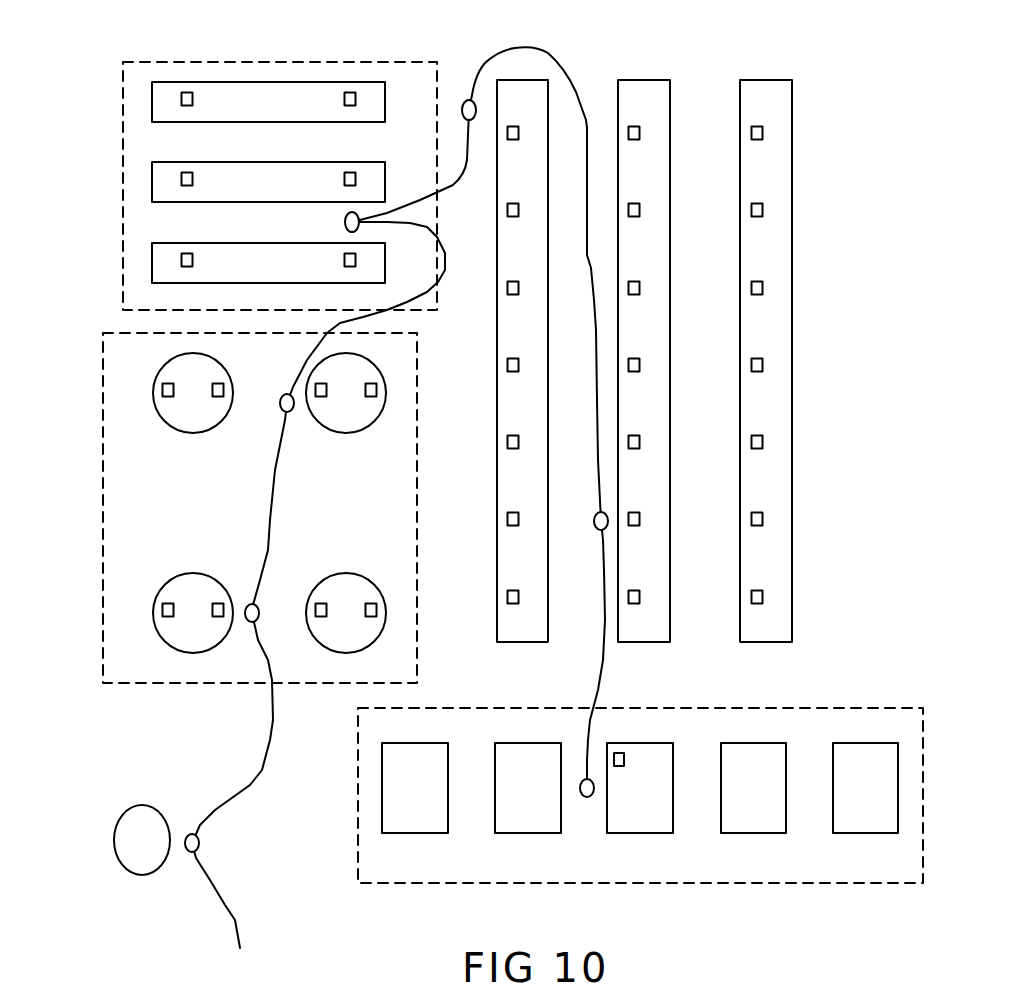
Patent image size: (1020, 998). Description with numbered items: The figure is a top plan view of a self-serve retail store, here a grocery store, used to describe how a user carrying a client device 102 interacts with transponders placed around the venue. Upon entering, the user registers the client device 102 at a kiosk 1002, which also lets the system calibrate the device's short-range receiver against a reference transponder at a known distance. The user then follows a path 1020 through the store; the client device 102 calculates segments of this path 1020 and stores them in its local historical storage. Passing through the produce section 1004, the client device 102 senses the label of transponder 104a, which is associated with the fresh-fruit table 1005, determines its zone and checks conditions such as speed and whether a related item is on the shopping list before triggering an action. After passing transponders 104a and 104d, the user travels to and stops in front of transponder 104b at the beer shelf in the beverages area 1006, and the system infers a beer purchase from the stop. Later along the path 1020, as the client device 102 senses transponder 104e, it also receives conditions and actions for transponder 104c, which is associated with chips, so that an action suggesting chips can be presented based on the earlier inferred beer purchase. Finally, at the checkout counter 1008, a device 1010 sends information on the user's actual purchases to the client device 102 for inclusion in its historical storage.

The client device 102 is at (362, 214).
The kiosk 1002 is at (140, 805).
The produce section 1004 is at (103, 636).
The fresh-fruit table 1005 is at (172, 590).
The beverages area 1006 is at (238, 62).
The checkout counter 1008 is at (866, 705).
The device 1010 is at (628, 752).
The path 1020 is at (540, 48).
The transponder 104a is at (220, 603).
The transponder 104b is at (344, 254).
The transponder 104c is at (640, 514).
The transponder 104d is at (321, 397).
The transponder 104e is at (640, 438).